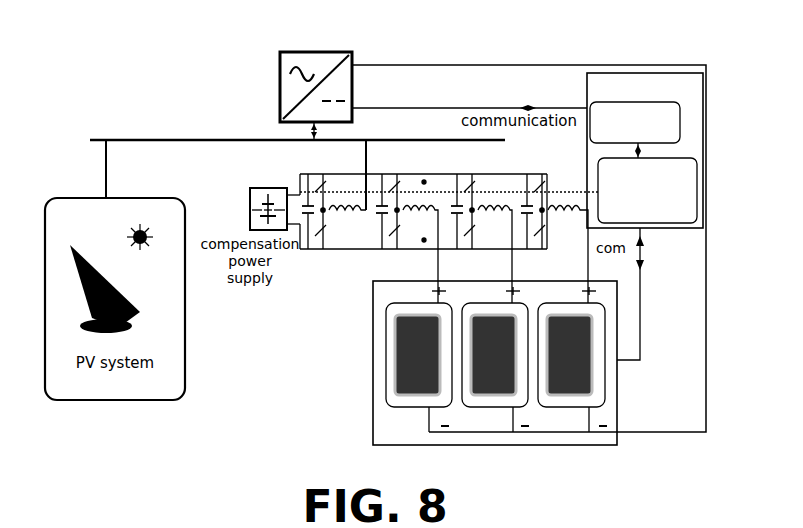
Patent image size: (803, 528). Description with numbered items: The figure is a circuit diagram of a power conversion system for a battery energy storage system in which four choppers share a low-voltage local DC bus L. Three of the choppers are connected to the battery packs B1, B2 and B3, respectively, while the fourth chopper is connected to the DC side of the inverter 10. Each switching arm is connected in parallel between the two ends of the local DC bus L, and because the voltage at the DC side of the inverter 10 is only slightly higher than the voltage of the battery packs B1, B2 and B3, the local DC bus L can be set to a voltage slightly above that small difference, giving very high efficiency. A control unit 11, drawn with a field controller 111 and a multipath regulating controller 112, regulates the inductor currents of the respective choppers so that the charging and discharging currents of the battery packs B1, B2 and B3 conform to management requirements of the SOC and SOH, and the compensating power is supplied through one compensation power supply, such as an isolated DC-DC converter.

The inverter 10 is at (316, 86).
The control unit 11 is at (694, 91).
The field controller 111 is at (635, 122).
The multipath regulating controller 112 is at (647, 190).
The local DC bus L is at (420, 226).
The battery pack B1 is at (418, 362).
The battery pack B2 is at (494, 362).
The battery pack B3 is at (571, 362).